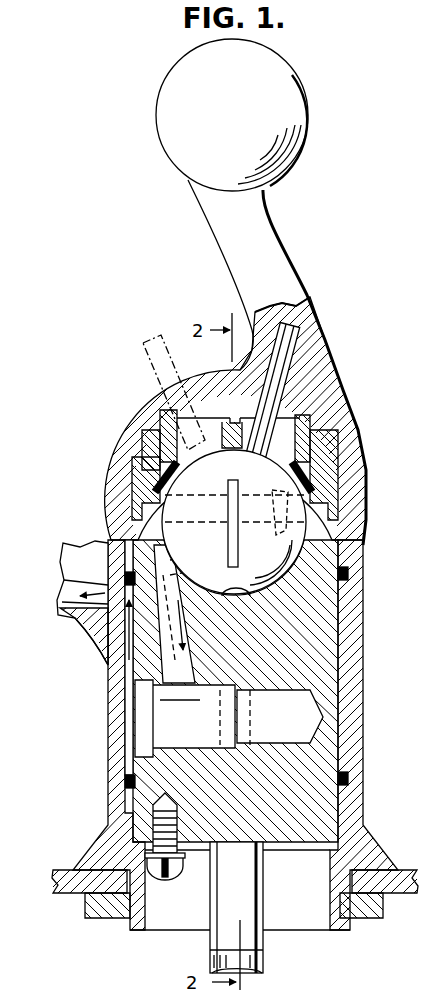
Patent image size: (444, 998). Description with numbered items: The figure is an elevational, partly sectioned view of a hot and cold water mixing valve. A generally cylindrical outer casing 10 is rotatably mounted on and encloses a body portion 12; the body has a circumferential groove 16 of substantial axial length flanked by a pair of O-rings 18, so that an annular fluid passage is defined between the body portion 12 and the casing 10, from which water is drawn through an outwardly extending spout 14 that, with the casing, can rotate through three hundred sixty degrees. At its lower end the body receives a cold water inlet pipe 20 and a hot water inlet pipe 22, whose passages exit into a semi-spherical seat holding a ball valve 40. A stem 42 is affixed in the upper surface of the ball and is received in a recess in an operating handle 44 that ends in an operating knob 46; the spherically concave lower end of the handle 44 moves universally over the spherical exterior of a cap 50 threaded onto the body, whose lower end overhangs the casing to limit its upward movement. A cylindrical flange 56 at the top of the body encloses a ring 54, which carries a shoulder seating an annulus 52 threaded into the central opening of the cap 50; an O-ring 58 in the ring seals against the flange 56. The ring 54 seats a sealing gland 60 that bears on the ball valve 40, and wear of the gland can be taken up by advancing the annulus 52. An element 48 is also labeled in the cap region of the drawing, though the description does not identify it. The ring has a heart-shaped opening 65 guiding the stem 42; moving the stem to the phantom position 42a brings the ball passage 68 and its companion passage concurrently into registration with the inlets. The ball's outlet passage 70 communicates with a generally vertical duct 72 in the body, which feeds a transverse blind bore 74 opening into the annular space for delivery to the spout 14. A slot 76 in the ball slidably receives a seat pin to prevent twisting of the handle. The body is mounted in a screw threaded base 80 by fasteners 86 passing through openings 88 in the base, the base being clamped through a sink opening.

The outer shell or casing 10 is at (366, 612).
The body portion 12 is at (330, 733).
The spout 14 is at (80, 540).
The groove or cavity 16 is at (343, 648).
The O-rings 18 is at (350, 578).
The cold water inlet pipe 20 is at (252, 958).
The hot water inlet pipe 22 is at (247, 915).
The ball valve 40 is at (305, 440).
The stem 42 is at (283, 357).
The stem phantom position 42a is at (150, 338).
The operating handle 44 is at (272, 238).
The operating knob 46 is at (172, 110).
The retainer ring 48 is at (337, 435).
The cap 50 is at (343, 472).
The annulus 52 is at (162, 415).
The ring 54 is at (146, 435).
The cylindrical flange 56 is at (330, 485).
The O-ring 58 is at (134, 490).
The sealing washer or gland 60 is at (234, 523).
The heart-shaped opening 65 is at (205, 430).
The passage 68 is at (191, 604).
The passage 70 is at (278, 488).
The duct 72 is at (128, 650).
The blind bore or passage 74 is at (320, 700).
The slot 76 is at (228, 510).
The screw threaded base 80 is at (140, 878).
The fasteners 86 is at (190, 882).
The openings 88 is at (187, 872).